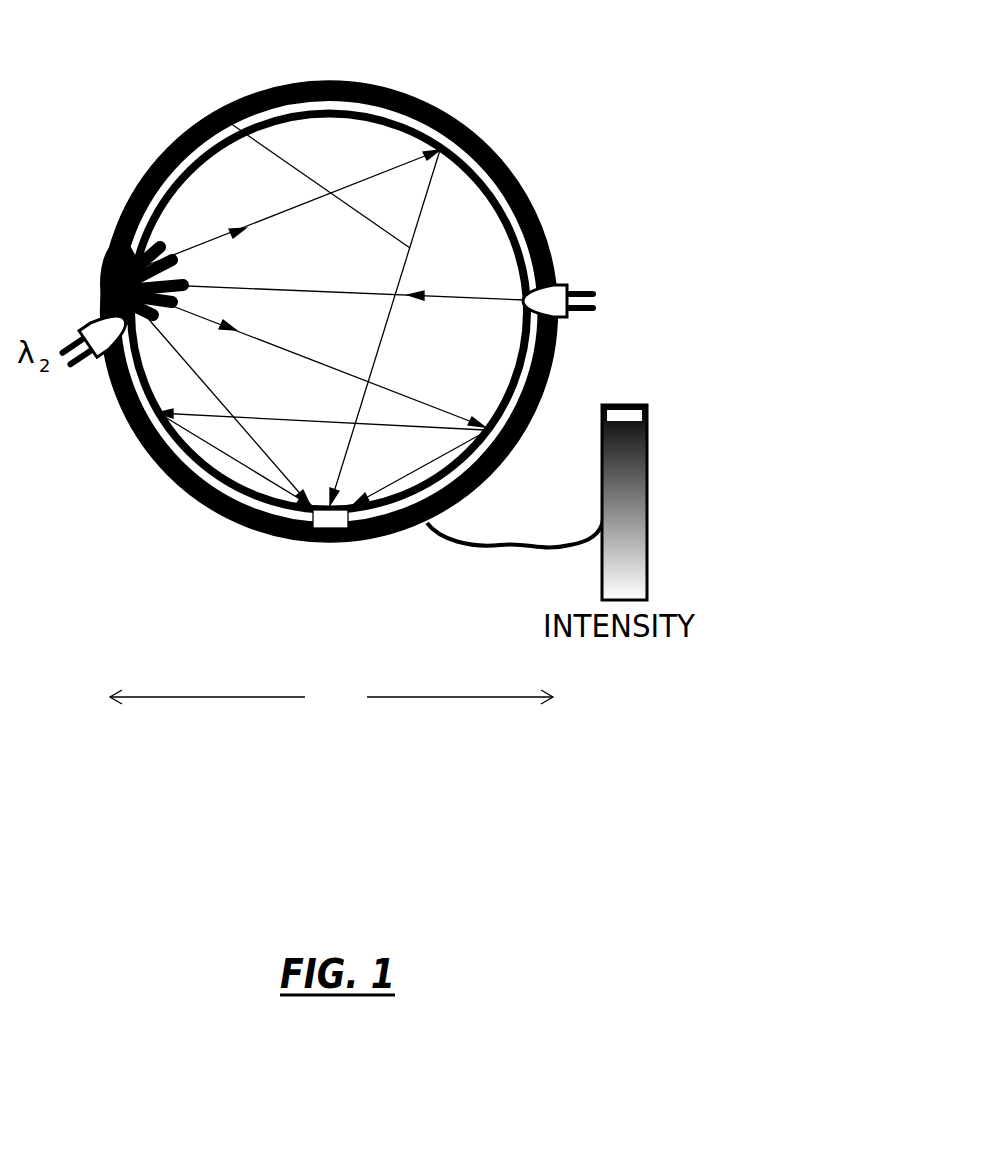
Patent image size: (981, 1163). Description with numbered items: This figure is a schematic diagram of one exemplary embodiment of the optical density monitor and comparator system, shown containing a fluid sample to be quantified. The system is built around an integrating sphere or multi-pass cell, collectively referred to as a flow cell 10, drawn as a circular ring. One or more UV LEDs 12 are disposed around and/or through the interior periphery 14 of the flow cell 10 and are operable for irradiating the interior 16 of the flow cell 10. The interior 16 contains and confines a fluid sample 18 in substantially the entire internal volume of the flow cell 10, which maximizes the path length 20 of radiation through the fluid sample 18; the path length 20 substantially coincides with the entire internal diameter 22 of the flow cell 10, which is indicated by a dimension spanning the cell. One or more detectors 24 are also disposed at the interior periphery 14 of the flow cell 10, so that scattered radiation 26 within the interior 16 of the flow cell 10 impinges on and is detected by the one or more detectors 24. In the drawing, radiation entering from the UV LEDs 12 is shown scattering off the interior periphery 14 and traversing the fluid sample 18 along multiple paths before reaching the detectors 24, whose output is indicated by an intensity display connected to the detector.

The flow cell 10 is at (460, 121).
The UV LED 12 is at (569, 288).
The interior periphery 14 is at (186, 436).
The interior 16 is at (287, 324).
The fluid sample 18 is at (332, 283).
The path length 20 is at (442, 293).
The internal diameter 22 is at (331, 700).
The detector 24 is at (323, 523).
The scattered radiation 26 is at (213, 112).